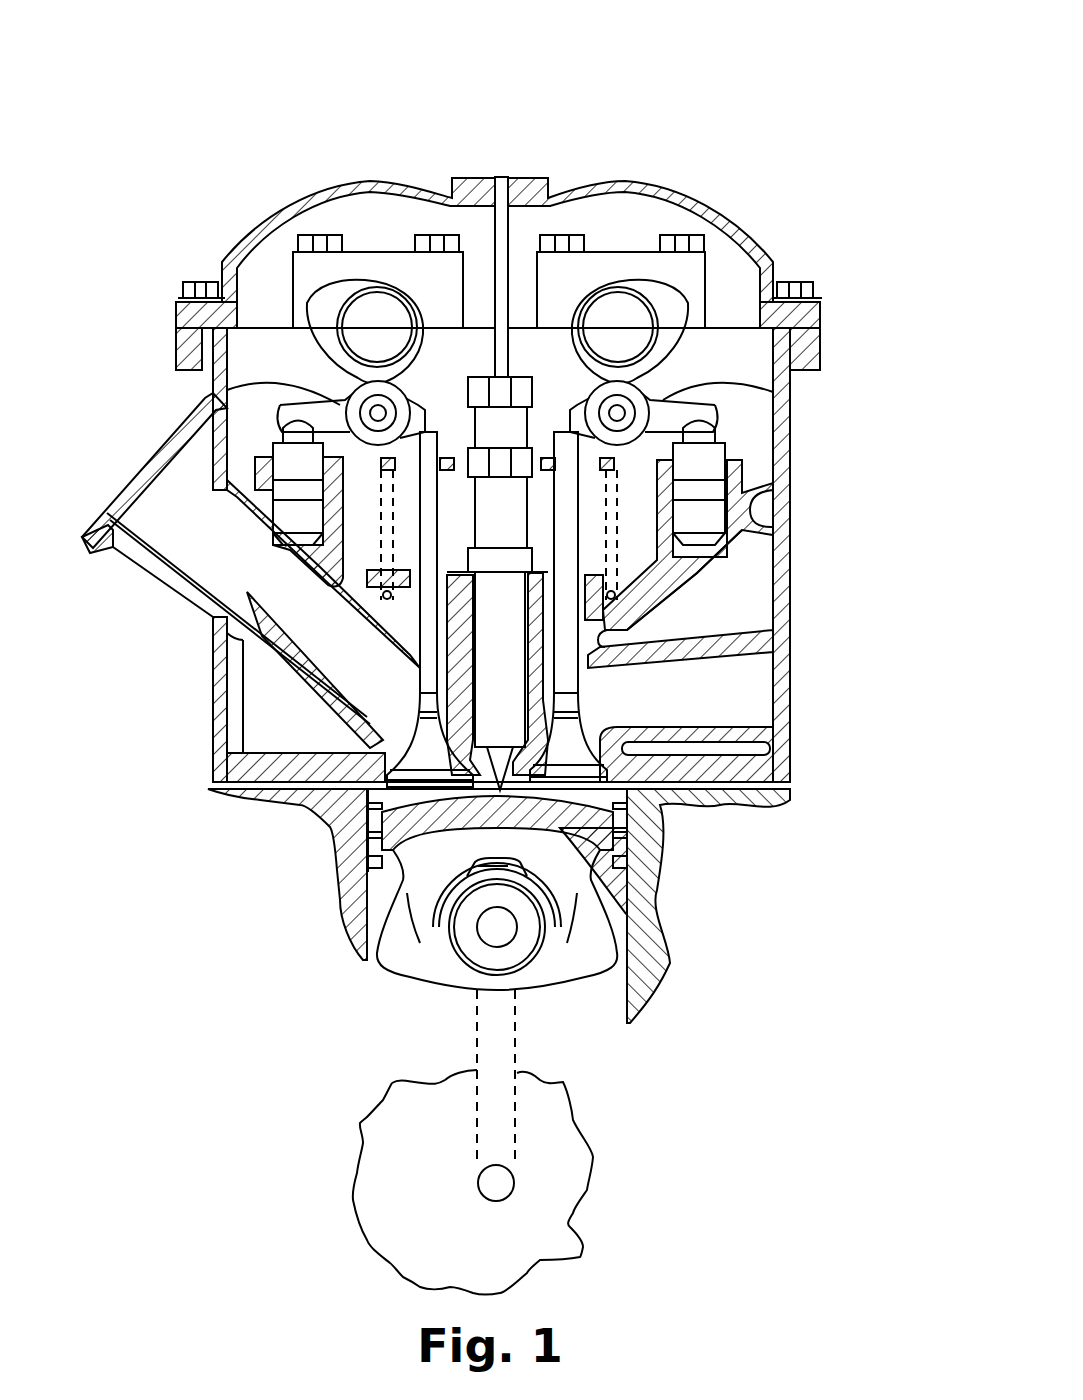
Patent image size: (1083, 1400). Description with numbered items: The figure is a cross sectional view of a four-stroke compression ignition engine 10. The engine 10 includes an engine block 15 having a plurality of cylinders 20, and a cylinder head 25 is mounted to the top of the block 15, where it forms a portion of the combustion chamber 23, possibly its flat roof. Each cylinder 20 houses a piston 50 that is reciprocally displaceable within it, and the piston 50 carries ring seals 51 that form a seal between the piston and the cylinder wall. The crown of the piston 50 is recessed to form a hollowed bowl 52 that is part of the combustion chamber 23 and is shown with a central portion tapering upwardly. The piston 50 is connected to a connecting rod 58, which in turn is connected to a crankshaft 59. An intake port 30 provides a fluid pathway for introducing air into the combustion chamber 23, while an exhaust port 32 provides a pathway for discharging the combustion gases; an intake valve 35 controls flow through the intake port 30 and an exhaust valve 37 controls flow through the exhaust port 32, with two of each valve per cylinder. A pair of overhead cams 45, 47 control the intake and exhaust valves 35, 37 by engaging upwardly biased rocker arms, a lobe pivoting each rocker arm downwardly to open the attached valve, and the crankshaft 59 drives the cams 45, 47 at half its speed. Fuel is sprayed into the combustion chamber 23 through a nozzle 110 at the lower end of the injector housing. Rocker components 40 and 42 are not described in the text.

The compression ignition engine 10 is at (597, 78).
The engine block 15 is at (357, 950).
The cylinder 20 is at (505, 915).
The combustion chamber 23 is at (343, 920).
The cylinder head 25 is at (213, 688).
The intake port 30 is at (193, 557).
The exhaust port 32 is at (512, 700).
The intake valve 35 is at (420, 805).
The exhaust valve 37 is at (540, 828).
The intake rocker arm assembly 40 is at (225, 392).
The exhaust rocker arm assembly 42 is at (663, 400).
The overhead cam 45 is at (355, 285).
The overhead cam 47 is at (625, 283).
The piston 50 is at (660, 913).
The ring seal 51 is at (373, 860).
The bowl 52 is at (600, 855).
The connecting rod 58 is at (477, 1006).
The crankshaft 59 is at (438, 1208).
The nozzle 110 is at (545, 832).